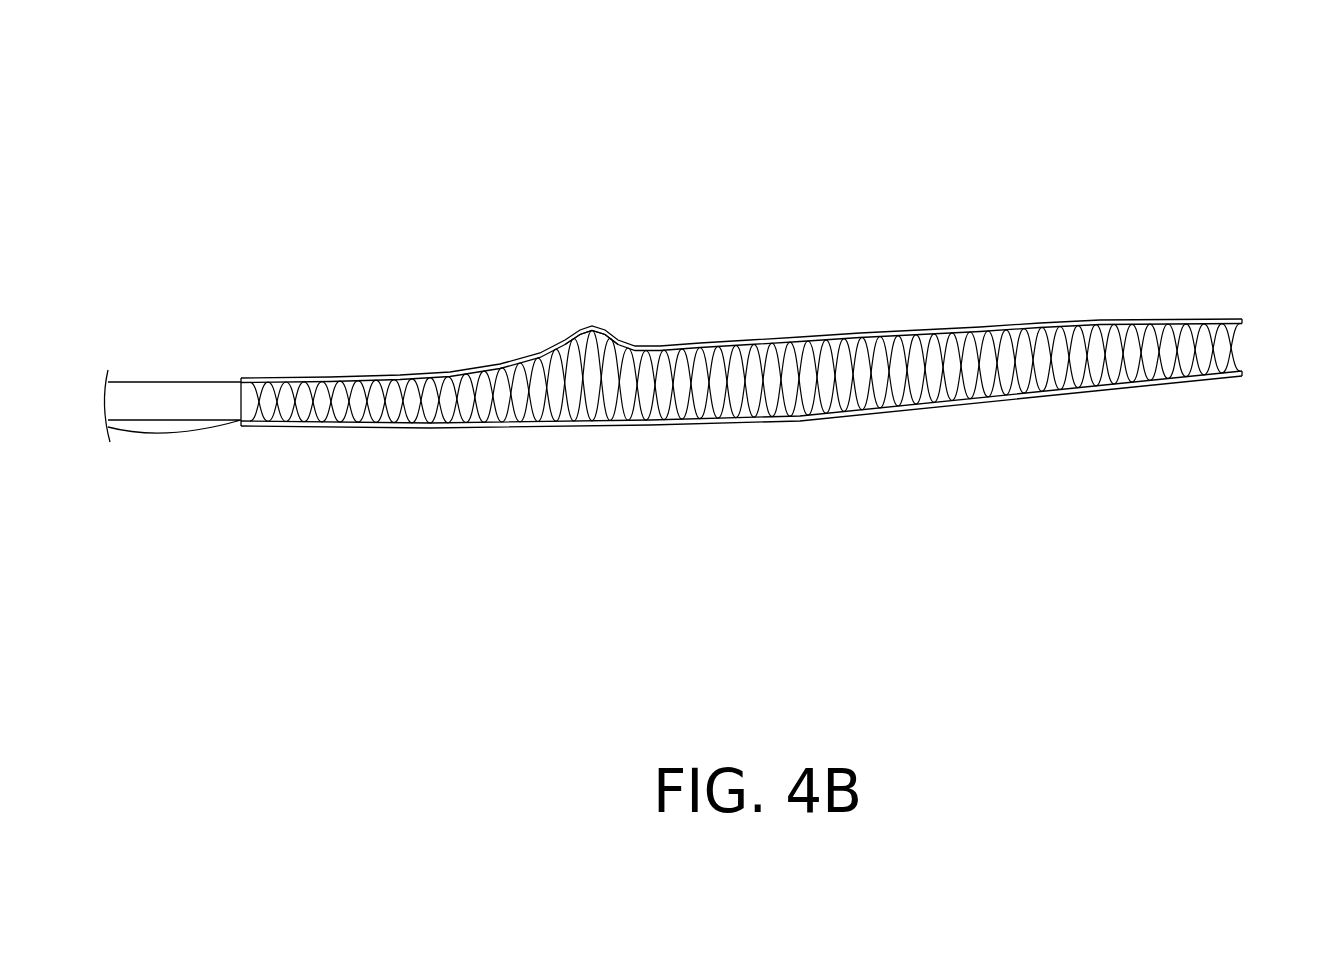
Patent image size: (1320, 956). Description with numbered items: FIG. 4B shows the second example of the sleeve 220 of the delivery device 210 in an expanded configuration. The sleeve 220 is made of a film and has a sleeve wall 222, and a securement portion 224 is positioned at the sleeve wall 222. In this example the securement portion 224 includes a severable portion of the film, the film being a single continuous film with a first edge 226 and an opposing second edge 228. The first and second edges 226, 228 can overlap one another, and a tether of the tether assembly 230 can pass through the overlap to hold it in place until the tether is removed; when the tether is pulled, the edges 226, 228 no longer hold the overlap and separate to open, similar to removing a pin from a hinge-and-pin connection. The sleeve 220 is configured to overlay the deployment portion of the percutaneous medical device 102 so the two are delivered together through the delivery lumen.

The delivery device 210 is at (1240, 185).
The sleeve 220 is at (1138, 395).
The sleeve wall 222 is at (928, 412).
The securement portion 224 is at (823, 412).
The first edge 226 is at (333, 378).
The second edge 228 is at (360, 432).
The tether assembly 230 is at (147, 452).
The percutaneous medical device 102 is at (572, 377).